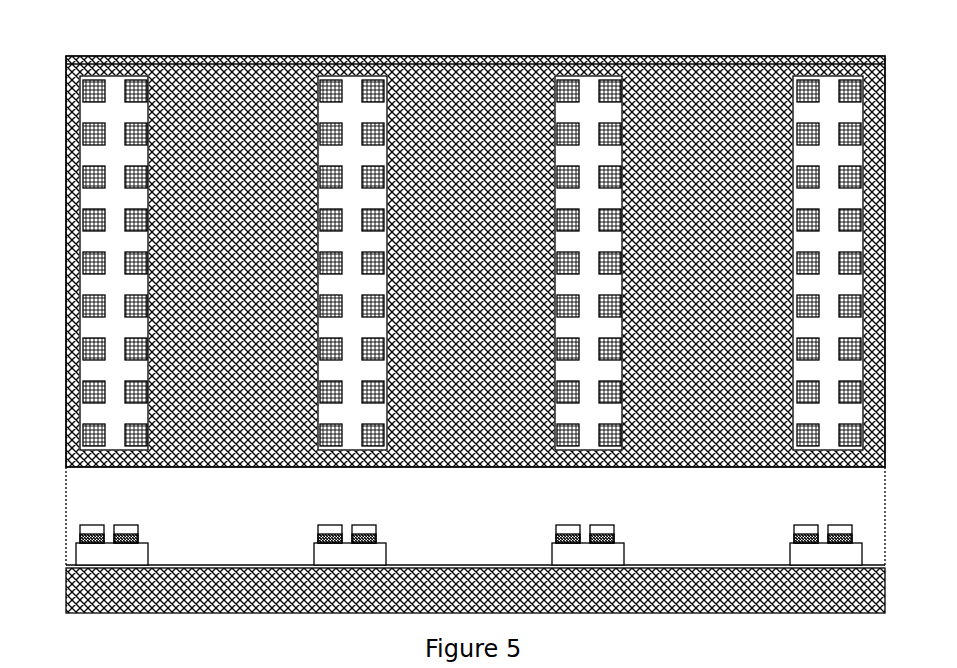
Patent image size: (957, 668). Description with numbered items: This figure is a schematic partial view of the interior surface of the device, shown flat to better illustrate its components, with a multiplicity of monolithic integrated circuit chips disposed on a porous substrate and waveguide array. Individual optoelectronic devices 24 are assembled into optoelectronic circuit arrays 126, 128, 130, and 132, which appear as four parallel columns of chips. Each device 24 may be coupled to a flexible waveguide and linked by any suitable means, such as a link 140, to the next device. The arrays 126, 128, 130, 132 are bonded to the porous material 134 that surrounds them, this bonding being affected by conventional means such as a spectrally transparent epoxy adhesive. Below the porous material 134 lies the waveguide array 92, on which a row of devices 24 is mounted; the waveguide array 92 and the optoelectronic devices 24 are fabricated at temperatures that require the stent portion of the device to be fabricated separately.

The device 24 is at (155, 528).
The waveguide array 92 is at (887, 135).
The optoelectronic circuit array 126 is at (120, 76).
The optoelectronic circuit array 128 is at (352, 76).
The optoelectronic circuit array 130 is at (592, 76).
The optoelectronic circuit array 132 is at (822, 76).
The porous material 134 is at (678, 430).
The link 140 is at (66, 137).